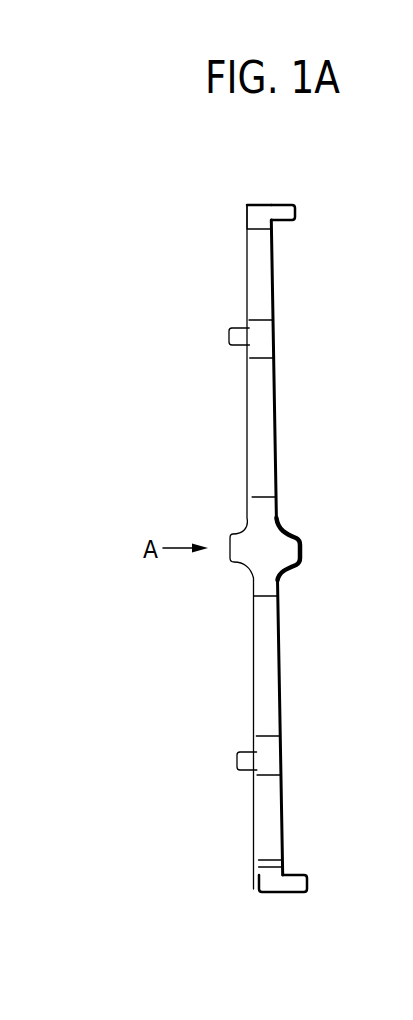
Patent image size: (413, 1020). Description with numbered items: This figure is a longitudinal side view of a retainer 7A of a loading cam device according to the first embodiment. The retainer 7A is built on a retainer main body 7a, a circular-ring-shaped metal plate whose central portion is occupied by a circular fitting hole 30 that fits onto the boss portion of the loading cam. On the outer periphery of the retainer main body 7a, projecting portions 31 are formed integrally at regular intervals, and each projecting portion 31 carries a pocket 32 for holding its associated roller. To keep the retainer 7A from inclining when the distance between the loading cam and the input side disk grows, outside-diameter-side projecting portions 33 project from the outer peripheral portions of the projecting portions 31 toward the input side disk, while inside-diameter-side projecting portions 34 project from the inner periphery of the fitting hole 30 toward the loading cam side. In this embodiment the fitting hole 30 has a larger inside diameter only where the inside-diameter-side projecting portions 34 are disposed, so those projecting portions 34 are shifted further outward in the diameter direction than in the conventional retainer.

The retainer 7A is at (313, 307).
The retainer main body 7a is at (275, 411).
The fitting hole 30 is at (279, 668).
The projecting portions 31 is at (263, 204).
The pockets 32 is at (258, 274).
The outside-diameter-side projecting portions 33 is at (291, 204).
The inside-diameter-side projecting portions 34 is at (229, 337).